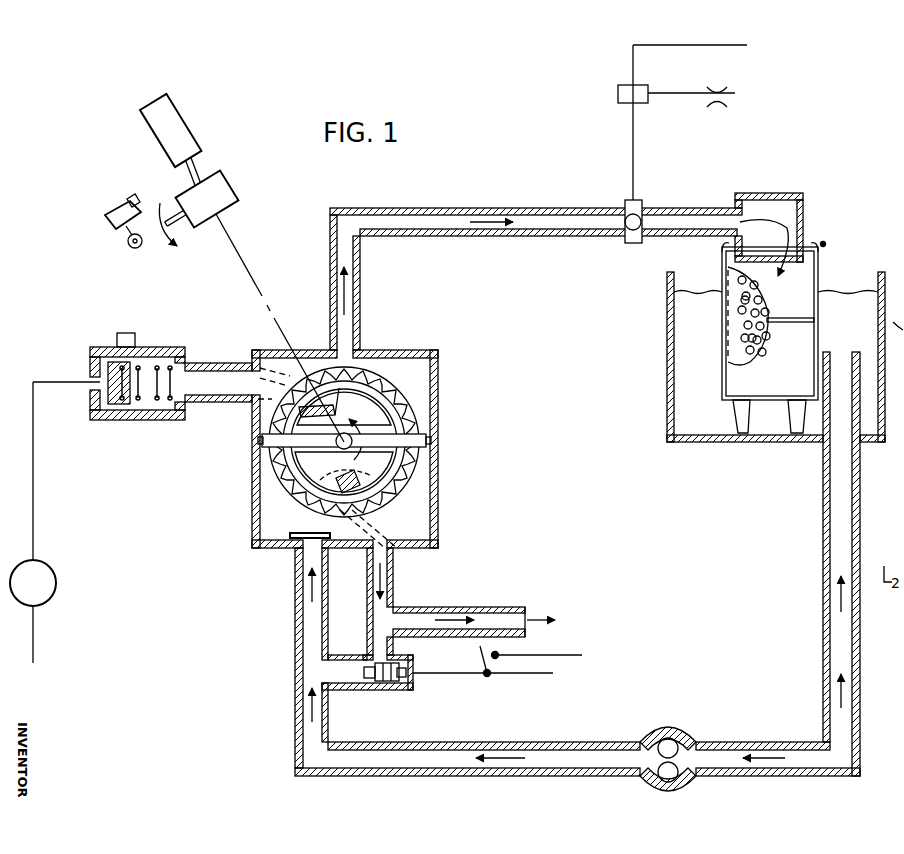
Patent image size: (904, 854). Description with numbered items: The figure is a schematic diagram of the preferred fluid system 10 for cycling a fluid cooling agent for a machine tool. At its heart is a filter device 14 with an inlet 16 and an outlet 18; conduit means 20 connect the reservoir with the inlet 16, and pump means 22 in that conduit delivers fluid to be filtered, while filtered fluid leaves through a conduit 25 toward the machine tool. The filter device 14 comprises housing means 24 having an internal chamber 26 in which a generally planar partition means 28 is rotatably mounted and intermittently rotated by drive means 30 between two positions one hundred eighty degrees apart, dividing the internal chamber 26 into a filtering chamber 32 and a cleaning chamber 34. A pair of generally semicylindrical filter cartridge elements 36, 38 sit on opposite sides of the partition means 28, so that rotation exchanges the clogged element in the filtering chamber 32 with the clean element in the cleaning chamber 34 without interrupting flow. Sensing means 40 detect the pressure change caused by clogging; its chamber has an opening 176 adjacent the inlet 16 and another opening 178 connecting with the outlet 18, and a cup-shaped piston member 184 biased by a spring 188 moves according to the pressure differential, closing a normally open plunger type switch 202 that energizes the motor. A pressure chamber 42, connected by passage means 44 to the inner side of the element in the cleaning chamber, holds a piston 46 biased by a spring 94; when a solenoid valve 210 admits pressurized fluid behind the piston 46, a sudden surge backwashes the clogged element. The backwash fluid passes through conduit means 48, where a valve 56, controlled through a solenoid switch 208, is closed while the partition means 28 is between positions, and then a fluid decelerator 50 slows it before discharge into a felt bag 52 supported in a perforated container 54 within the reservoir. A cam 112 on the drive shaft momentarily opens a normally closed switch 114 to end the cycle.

The fluid system 10 is at (828, 137).
The filter device 14 is at (356, 424).
The inlet 16 is at (303, 553).
The outlet 18 is at (388, 529).
The conduit means 20 is at (560, 742).
The pump means 22 is at (686, 732).
The housing means 24 is at (360, 439).
The conduit 25 is at (440, 607).
The internal chamber 26 is at (412, 358).
The partition means 28 is at (414, 446).
The drive means 30 is at (236, 168).
The filtering chamber 32 is at (301, 506).
The cleaning chamber 34 is at (430, 402).
The filter cartridge element 36 is at (277, 464).
The filter cartridge element 38 is at (372, 372).
The sensing means 40 is at (400, 686).
The pressure chamber 42 is at (136, 382).
The passage means 44 is at (242, 404).
The piston 46 is at (96, 368).
The conduit means 48 is at (478, 208).
The fluid decelerator 50 is at (803, 205).
The felt bag 52 is at (824, 243).
The perforated container 54 is at (832, 281).
The valve 56 is at (645, 204).
The spring 94 is at (152, 348).
The cam 112 is at (135, 249).
The switch 114 is at (128, 204).
The opening 176 is at (324, 673).
The opening 178 is at (392, 657).
The piston member 184 is at (354, 688).
The spring 188 is at (392, 692).
The switch 202 is at (497, 677).
The solenoid switch 208 is at (620, 85).
The solenoid valve 210 is at (57, 583).